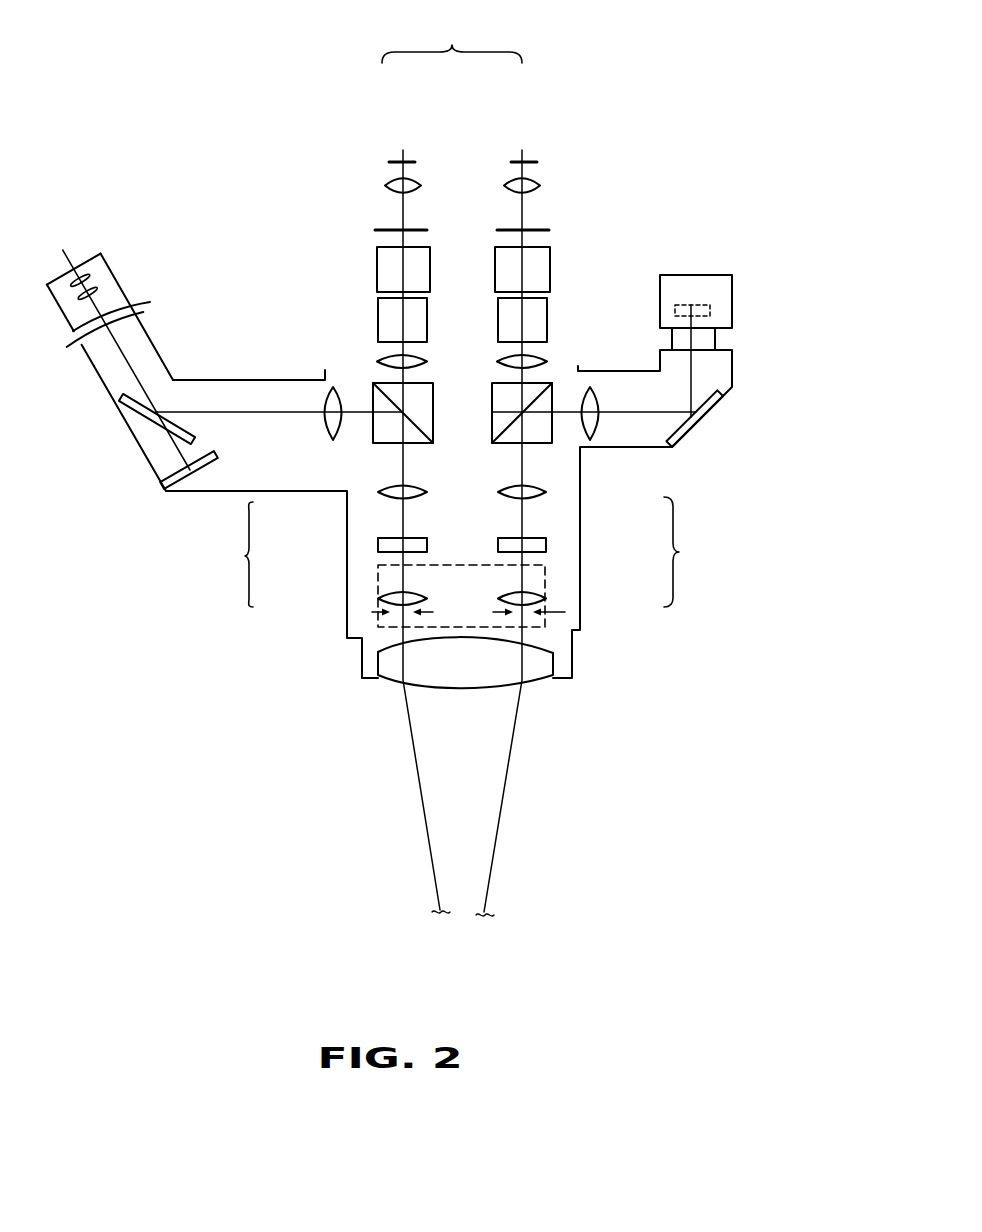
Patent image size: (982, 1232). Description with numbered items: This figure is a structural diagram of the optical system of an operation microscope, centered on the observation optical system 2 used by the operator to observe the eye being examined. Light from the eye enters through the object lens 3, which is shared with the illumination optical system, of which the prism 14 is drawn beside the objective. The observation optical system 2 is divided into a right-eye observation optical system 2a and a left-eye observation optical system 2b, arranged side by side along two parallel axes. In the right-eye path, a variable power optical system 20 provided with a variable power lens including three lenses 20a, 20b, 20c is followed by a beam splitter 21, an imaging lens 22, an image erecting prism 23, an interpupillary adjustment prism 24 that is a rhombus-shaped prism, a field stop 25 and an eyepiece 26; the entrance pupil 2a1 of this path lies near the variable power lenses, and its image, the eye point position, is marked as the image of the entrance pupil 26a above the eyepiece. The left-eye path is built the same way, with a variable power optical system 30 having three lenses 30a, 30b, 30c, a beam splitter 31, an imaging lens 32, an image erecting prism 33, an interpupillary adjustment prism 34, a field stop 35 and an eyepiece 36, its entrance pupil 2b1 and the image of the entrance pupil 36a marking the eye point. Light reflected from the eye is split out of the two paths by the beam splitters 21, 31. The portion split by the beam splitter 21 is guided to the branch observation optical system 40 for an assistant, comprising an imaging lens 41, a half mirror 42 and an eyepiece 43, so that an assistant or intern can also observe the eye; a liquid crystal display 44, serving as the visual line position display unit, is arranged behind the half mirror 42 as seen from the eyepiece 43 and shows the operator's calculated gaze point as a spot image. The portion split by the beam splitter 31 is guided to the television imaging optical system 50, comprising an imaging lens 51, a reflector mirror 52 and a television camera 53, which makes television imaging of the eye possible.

The observation optical system 2 is at (452, 37).
The right-eye observation optical system 2a is at (399, 140).
The left-eye observation optical system 2b is at (519, 140).
The object lens 3 is at (557, 663).
The prism 14 is at (453, 630).
The variable power optical system 20 is at (228, 554).
The lens 20a is at (378, 590).
The lens 20b is at (378, 545).
The lens 20c is at (347, 496).
The entrance pupil 2a1 is at (372, 612).
The beam splitter 21 is at (377, 362).
The imaging lens 22 is at (372, 393).
The image erecting prism 23 is at (378, 310).
The interpupillary adjustment prism 24 is at (383, 262).
The field stop 25 is at (377, 230).
The eyepiece 26 is at (385, 184).
The image of the entrance pupil 26a is at (389, 162).
The variable power optical system 30 is at (692, 552).
The lens 30a is at (548, 591).
The lens 30b is at (547, 545).
The lens 30c is at (547, 493).
The entrance pupil 2b1 is at (566, 612).
The beam splitter 31 is at (553, 447).
The imaging lens 32 is at (548, 357).
The image erecting prism 33 is at (547, 310).
The interpupillary adjustment prism 34 is at (550, 263).
The field stop 35 is at (540, 231).
The eyepiece 36 is at (541, 186).
The image of the entrance pupil 36a is at (534, 161).
The branch observation optical system 40 is at (161, 452).
The imaging lens 41 is at (325, 408).
The half mirror 42 is at (143, 418).
The eyepiece 43 is at (103, 272).
The liquid crystal display 44 is at (173, 492).
The television imaging optical system 50 is at (709, 450).
The imaging lens 51 is at (597, 400).
The reflector mirror 52 is at (718, 408).
The television camera 53 is at (691, 275).